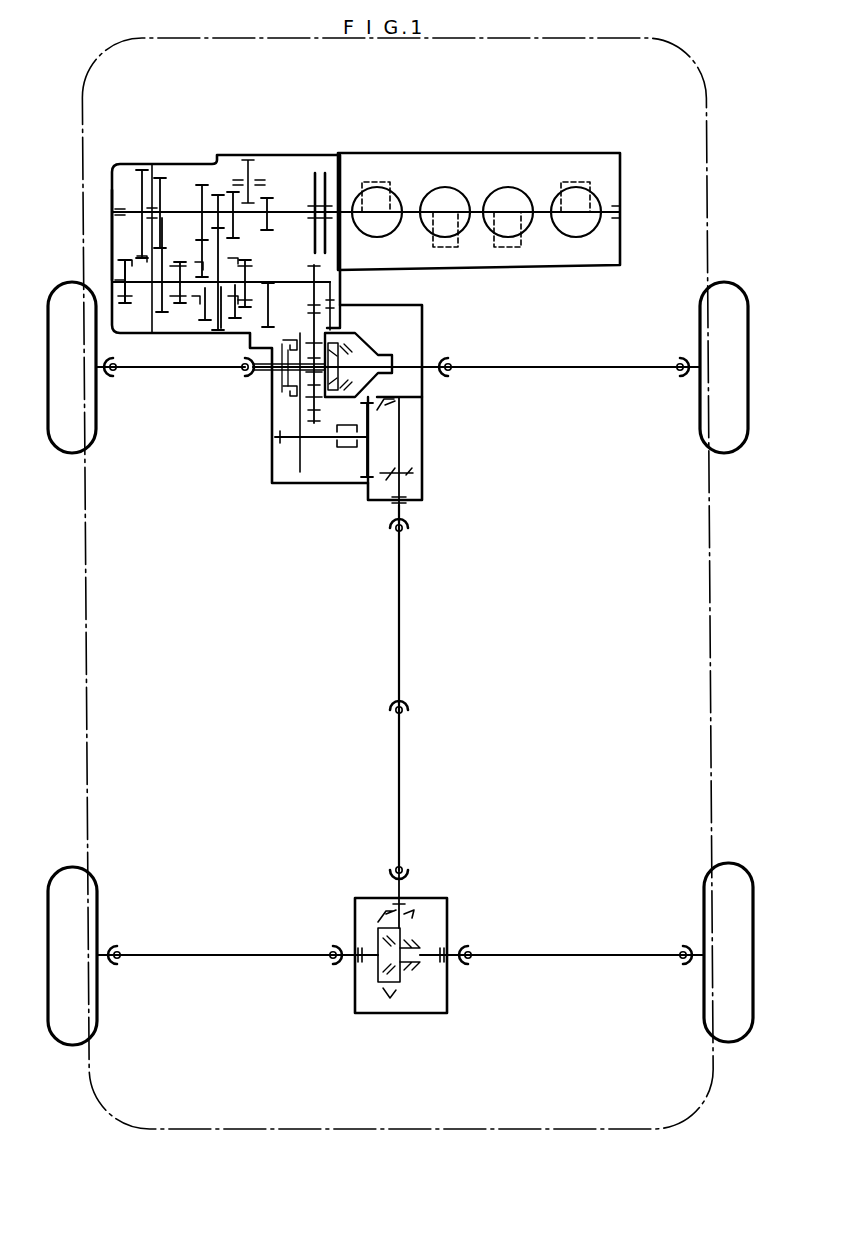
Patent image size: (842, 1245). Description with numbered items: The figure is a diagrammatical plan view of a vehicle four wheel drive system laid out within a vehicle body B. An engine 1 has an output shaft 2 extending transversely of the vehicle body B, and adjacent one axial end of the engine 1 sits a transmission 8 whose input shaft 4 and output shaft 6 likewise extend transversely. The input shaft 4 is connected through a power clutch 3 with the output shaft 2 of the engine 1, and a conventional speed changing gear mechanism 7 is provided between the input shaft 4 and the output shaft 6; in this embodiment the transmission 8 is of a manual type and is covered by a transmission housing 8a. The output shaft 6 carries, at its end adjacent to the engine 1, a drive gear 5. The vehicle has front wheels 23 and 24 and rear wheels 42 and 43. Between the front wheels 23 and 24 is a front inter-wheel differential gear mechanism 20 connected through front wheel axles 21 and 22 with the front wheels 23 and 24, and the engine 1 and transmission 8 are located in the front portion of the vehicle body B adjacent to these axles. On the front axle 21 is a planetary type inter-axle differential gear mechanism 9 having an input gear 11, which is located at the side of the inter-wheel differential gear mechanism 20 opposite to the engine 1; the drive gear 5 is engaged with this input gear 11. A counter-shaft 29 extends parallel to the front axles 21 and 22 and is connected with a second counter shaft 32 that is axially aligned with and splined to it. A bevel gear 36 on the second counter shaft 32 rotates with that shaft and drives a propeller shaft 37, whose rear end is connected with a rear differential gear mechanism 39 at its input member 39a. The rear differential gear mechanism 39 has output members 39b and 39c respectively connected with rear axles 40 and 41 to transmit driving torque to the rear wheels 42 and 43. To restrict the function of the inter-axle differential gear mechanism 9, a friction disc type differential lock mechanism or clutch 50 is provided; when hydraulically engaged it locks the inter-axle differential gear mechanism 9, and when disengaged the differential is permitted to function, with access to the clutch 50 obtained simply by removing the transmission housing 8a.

The vehicle body B is at (80, 130).
The engine 1 is at (515, 167).
The output shaft 2 is at (346, 168).
The power clutch 3 is at (313, 180).
The input shaft 4 is at (190, 210).
The drive gear 5 is at (316, 268).
The output shaft 6 is at (290, 277).
The speed changing gear mechanism 7 is at (128, 240).
The transmission 8 is at (150, 150).
The transmission housing 8a is at (112, 182).
The inter-axle differential gear mechanism 9 is at (336, 302).
The input gear 11 is at (245, 343).
The front inter-wheel differential gear mechanism 20 is at (378, 330).
The front wheel axle 21 is at (262, 372).
The front wheel axle 22 is at (440, 357).
The front wheel 23 is at (96, 441).
The front wheel 24 is at (704, 444).
The counter-shaft 29 is at (317, 441).
The second counter shaft 32 is at (367, 440).
The bevel gear 36 is at (377, 425).
The propeller shaft 37 is at (408, 508).
The rear differential gear mechanism 39 is at (466, 905).
The input member 39a is at (397, 900).
The output member 39b is at (382, 963).
The output member 39c is at (418, 960).
The rear axle 40 is at (240, 960).
The rear axle 41 is at (600, 950).
The rear wheel 42 is at (80, 917).
The rear wheel 43 is at (712, 883).
The clutch 50 is at (270, 400).